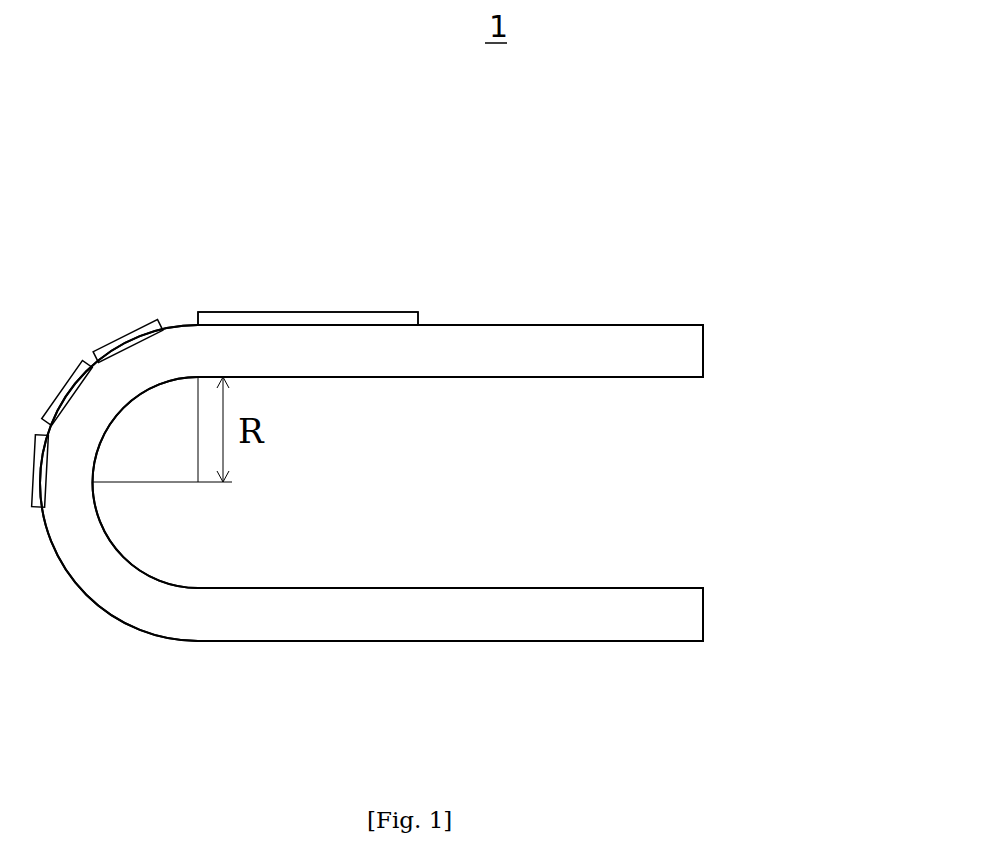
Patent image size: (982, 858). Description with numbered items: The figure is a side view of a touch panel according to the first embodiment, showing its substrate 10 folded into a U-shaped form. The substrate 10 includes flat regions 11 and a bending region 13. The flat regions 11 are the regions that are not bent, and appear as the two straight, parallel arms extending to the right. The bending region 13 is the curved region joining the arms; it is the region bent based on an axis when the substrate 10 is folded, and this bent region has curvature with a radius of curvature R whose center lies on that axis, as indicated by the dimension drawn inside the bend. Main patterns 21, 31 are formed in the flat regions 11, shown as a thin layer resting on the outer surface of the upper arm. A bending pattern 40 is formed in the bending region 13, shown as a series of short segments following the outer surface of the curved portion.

The substrate 10 is at (445, 457).
The flat regions 11 is at (585, 325).
The bending region 13 is at (125, 592).
The main pattern 21 is at (278, 312).
The main pattern 31 is at (278, 312).
The bending pattern 40 is at (113, 337).